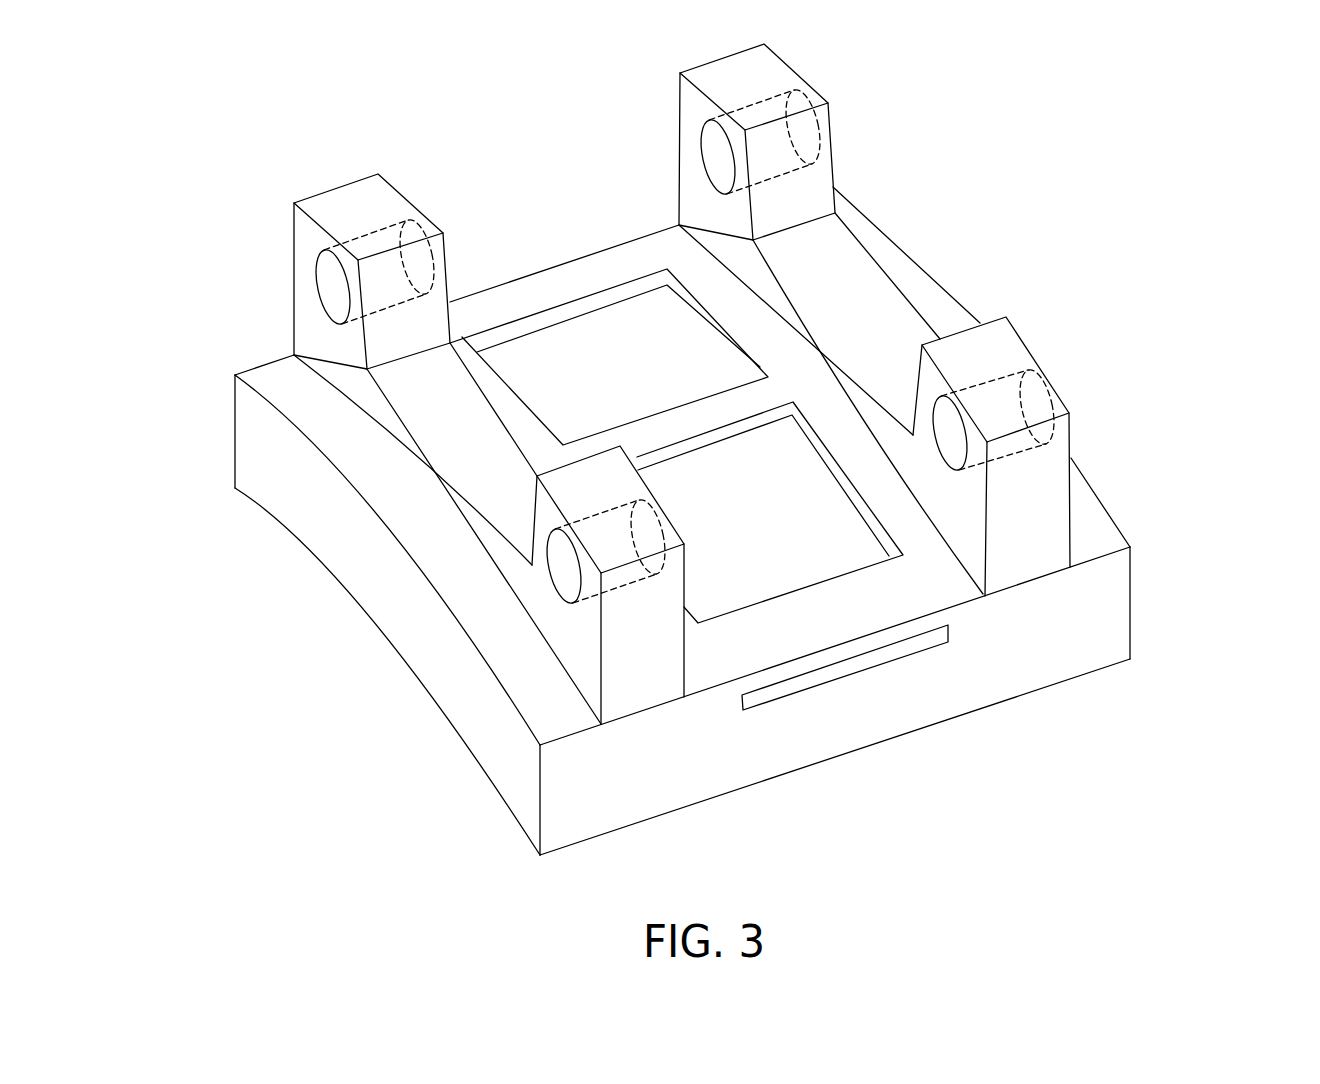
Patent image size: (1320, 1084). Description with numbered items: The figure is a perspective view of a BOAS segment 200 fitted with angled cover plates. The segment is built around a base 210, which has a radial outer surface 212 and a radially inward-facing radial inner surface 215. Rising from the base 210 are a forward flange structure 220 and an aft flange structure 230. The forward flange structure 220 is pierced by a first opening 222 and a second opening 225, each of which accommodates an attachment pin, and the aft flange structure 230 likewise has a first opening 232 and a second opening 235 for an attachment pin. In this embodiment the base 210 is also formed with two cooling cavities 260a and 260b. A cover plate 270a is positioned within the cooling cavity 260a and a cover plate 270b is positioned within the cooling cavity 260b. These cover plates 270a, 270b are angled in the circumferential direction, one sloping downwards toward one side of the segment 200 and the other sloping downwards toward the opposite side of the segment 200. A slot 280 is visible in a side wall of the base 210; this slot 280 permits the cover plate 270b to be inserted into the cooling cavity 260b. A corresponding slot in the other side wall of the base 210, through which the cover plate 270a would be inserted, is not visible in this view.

The BOAS segment 200 is at (268, 92).
The base 210 is at (1137, 568).
The radial outer surface 212 is at (1098, 528).
The radial inner surface 215 is at (1103, 667).
The forward flange structure 220 is at (305, 338).
The first opening 222 is at (318, 285).
The second opening 225 is at (582, 600).
The aft flange structure 230 is at (832, 165).
The first opening 232 is at (702, 127).
The second opening 235 is at (1053, 383).
The cooling cavity 260a is at (570, 300).
The cooling cavity 260b is at (838, 454).
The cover plate 270a is at (657, 315).
The cover plate 270b is at (787, 456).
The slot 280 is at (928, 650).